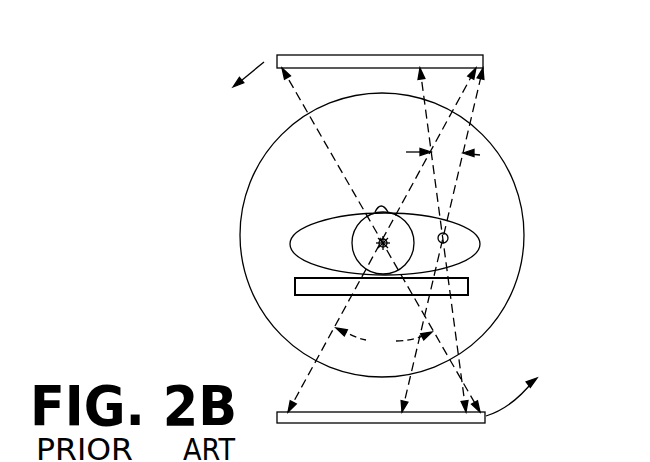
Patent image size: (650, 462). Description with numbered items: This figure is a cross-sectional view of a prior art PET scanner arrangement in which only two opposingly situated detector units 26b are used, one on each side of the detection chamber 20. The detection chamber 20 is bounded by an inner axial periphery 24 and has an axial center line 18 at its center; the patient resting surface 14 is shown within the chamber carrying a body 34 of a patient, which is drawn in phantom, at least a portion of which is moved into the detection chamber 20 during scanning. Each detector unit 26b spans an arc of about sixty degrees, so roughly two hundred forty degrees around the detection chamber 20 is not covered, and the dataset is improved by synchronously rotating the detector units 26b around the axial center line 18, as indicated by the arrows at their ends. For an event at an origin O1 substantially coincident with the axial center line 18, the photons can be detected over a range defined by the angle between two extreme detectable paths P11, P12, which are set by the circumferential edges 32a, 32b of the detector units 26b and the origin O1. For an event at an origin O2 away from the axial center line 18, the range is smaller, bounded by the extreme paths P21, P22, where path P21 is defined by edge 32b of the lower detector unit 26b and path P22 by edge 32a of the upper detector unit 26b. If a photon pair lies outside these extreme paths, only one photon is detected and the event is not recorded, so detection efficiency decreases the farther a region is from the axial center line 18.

The patient resting surface 14 is at (469, 284).
The axial center line 18 is at (378, 238).
The detection chamber 20 is at (314, 328).
The inner axial periphery 24 is at (241, 228).
The detector units 26b is at (388, 55).
The circumferential edge 32a is at (472, 55).
The circumferential edge 32b is at (292, 41).
The body of a patient 34 is at (479, 242).
The origin O1 is at (356, 218).
The origin O2 is at (448, 233).
The extreme detectable path P11 is at (344, 168).
The extreme detectable path P12 is at (311, 361).
The extreme detectable path P21 is at (427, 127).
The extreme detectable path P22 is at (475, 107).